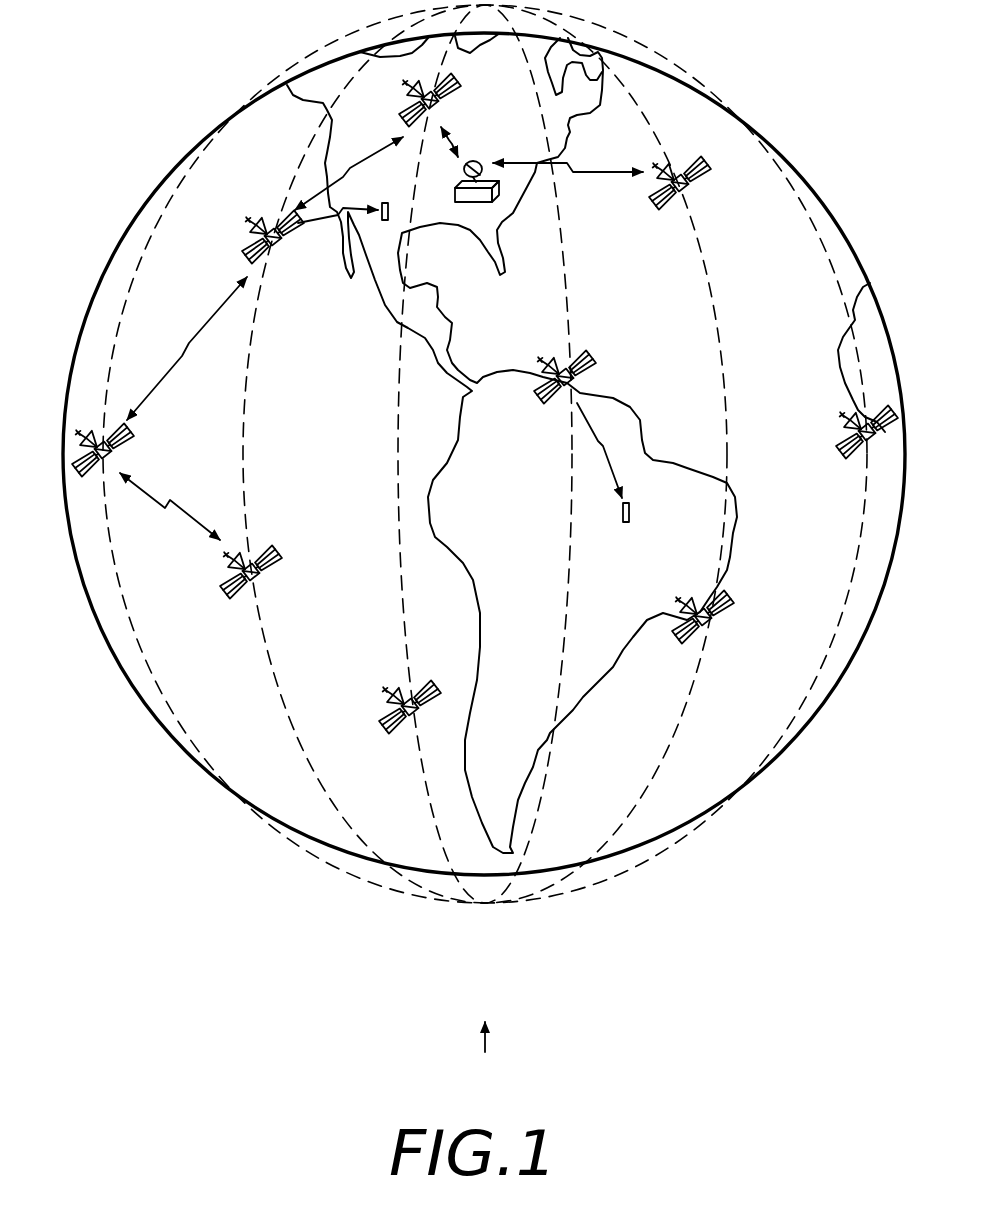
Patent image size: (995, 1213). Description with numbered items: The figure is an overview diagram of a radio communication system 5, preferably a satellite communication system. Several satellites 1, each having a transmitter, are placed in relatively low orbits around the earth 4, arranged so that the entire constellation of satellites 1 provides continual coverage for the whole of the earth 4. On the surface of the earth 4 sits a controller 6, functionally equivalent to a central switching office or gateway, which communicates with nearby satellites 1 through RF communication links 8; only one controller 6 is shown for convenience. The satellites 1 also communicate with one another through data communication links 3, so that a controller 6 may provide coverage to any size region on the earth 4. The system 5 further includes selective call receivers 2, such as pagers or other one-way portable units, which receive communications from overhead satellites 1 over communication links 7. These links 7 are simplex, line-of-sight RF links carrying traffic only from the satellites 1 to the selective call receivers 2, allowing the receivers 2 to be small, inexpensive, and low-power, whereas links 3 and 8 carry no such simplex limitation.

The satellite 1 is at (703, 183).
The selective call receiver 2 is at (390, 213).
The data communication link 3 is at (388, 162).
The earth 4 is at (92, 300).
The radio communication system 5 is at (485, 1058).
The controller 6 is at (500, 191).
The communication link 7 is at (323, 217).
The RF communication link 8 is at (460, 136).